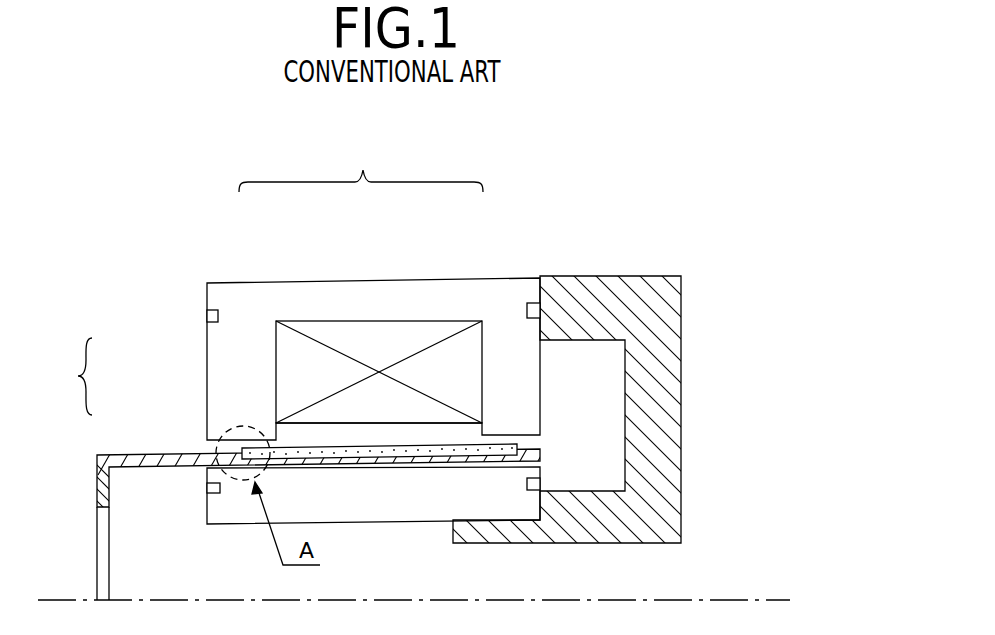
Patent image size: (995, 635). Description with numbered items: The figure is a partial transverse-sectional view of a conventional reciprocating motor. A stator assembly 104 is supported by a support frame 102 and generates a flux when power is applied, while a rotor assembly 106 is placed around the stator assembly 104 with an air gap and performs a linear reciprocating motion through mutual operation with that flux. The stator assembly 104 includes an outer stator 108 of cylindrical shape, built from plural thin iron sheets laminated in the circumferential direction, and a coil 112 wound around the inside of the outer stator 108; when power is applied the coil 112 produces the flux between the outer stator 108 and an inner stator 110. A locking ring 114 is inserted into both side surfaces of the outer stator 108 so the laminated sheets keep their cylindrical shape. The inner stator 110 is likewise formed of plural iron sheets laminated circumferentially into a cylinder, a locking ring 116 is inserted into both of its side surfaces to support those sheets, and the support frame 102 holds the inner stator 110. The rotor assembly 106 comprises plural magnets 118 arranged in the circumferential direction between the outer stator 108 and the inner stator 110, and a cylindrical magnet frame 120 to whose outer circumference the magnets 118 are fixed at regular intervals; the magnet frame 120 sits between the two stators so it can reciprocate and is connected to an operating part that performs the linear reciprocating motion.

The support frame 102 is at (655, 322).
The stator assembly 104 is at (361, 165).
The rotor assembly 106 is at (61, 376).
The outer stator 108 is at (249, 307).
The inner stator 110 is at (405, 487).
The coil 112 is at (356, 337).
The locking ring 114 is at (207, 318).
The locking ring 116 is at (207, 489).
The magnet 118 is at (300, 448).
The magnet frame 120 is at (153, 455).